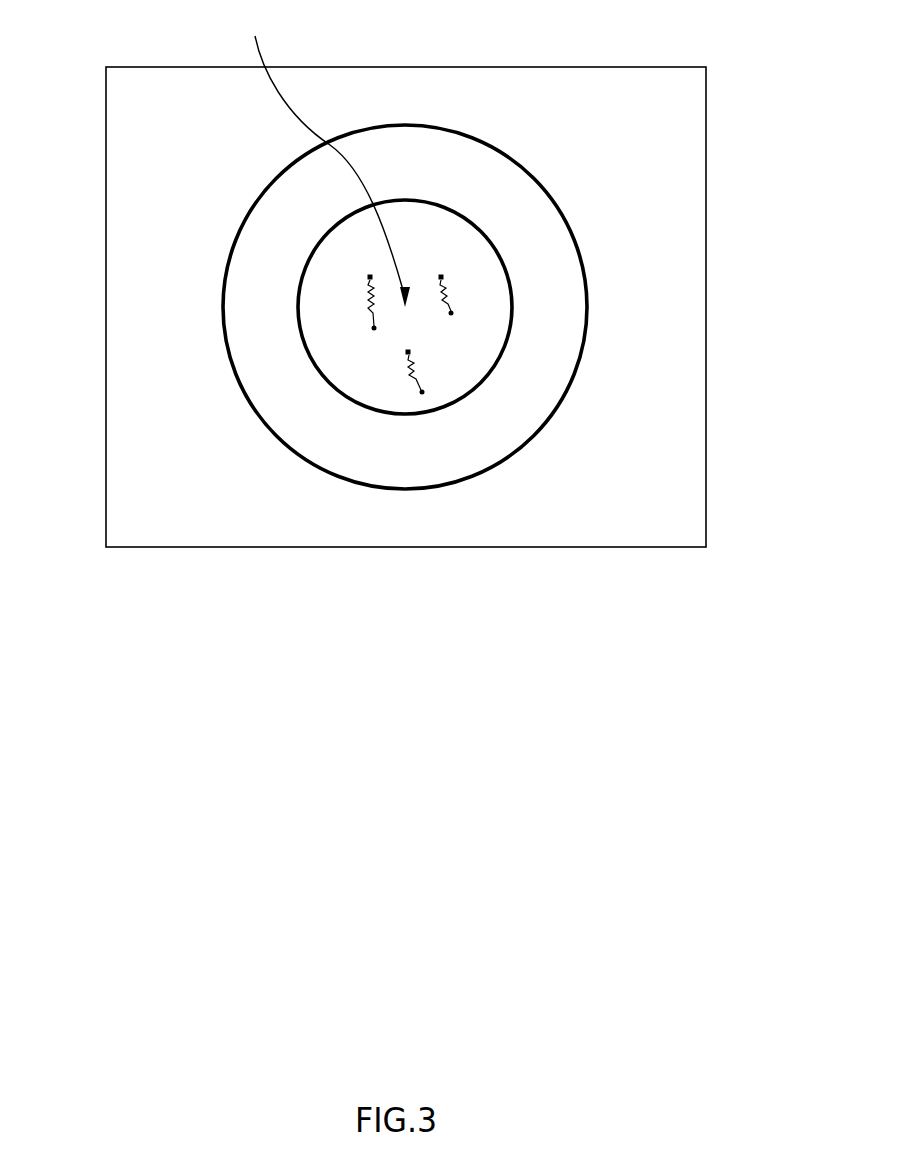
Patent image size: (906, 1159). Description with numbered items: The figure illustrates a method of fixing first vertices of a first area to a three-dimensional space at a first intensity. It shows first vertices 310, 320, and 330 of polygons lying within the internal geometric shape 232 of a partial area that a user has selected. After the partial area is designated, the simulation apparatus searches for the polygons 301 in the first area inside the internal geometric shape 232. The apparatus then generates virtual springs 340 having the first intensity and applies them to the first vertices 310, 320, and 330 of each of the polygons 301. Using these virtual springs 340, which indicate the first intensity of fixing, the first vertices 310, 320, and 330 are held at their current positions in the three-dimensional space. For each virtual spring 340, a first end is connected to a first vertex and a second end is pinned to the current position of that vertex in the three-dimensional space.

The polygons 301 is at (323, 159).
The internal geometric shape 232 is at (428, 206).
The first vertex 310 is at (370, 277).
The first vertex 320 is at (408, 352).
The first vertex 330 is at (441, 277).
The virtual springs 340 is at (451, 313).